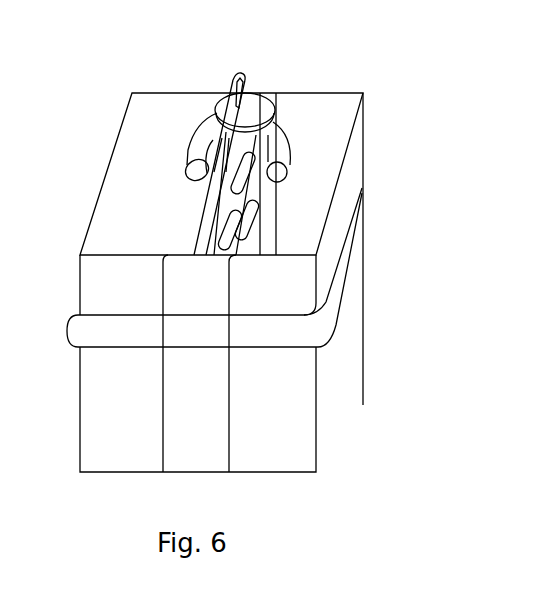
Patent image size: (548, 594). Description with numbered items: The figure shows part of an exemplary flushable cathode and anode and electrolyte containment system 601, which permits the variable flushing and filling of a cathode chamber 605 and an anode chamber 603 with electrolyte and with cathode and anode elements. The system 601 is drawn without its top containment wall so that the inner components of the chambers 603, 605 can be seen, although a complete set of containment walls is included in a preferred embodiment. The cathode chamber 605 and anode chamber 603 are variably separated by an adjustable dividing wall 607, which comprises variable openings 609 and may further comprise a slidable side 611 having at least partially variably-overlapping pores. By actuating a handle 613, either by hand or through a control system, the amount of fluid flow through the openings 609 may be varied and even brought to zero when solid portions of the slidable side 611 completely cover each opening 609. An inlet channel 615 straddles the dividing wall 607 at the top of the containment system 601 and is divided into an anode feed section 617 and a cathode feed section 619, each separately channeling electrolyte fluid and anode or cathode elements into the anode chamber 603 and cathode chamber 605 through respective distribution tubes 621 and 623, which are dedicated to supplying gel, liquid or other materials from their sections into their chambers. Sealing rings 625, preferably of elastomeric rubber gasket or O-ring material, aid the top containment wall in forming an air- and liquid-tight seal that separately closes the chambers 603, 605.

The flushable cathode and anode and electrolyte containment system 601 is at (68, 480).
The anode chamber 603 is at (125, 175).
The cathode chamber 605 is at (308, 210).
The adjustable dividing wall 607 is at (206, 199).
The variable openings 609 is at (227, 238).
The slidable side 611 is at (207, 220).
The handle 613 is at (243, 85).
The inlet channel 615 is at (265, 118).
The anode feed section 617 is at (223, 108).
The cathode feed section 619 is at (268, 108).
The distribution tube 621 is at (202, 152).
The distribution tube 623 is at (275, 150).
The sealing rings 625 is at (305, 333).